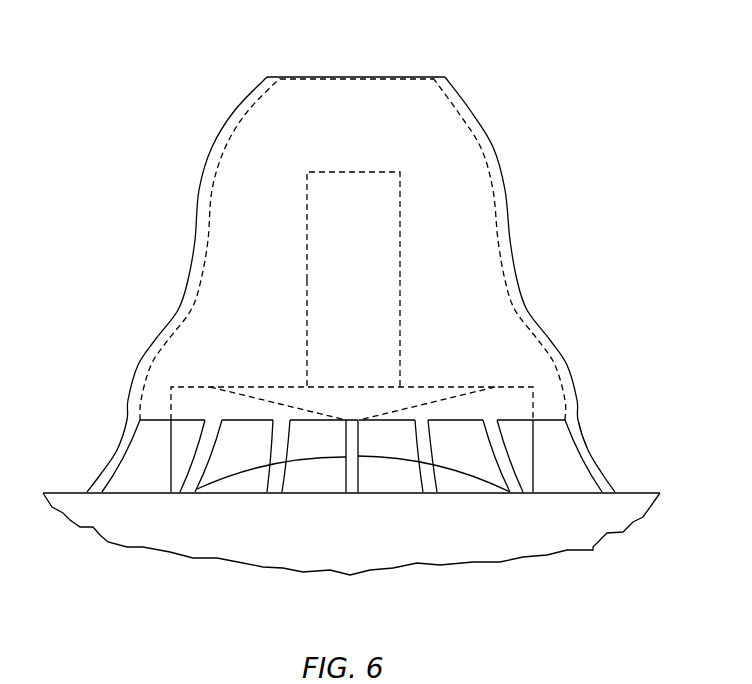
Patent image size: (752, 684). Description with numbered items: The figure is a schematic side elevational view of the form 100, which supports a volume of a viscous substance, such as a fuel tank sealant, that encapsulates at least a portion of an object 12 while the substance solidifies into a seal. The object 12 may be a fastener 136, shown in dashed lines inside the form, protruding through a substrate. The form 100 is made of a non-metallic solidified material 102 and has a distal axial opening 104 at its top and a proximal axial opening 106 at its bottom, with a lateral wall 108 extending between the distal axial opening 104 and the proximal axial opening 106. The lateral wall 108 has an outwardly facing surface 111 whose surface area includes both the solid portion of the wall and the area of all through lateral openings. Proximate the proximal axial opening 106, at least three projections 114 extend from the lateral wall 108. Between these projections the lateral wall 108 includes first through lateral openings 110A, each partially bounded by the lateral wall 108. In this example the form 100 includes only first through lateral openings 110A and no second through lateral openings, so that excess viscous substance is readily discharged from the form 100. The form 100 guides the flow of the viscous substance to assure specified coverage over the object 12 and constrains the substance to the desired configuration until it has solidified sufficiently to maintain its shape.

The form 100 is at (545, 125).
The non-metallic solidified material 102 is at (200, 180).
The distal axial opening 104 is at (396, 70).
The proximal axial opening 106 is at (309, 500).
The lateral wall 108 is at (546, 226).
The outwardly facing surface 111 is at (197, 253).
The object 12 is at (421, 297).
The fastener 136 is at (415, 220).
The projections 114 is at (102, 465).
The first through lateral opening 110A is at (133, 477).